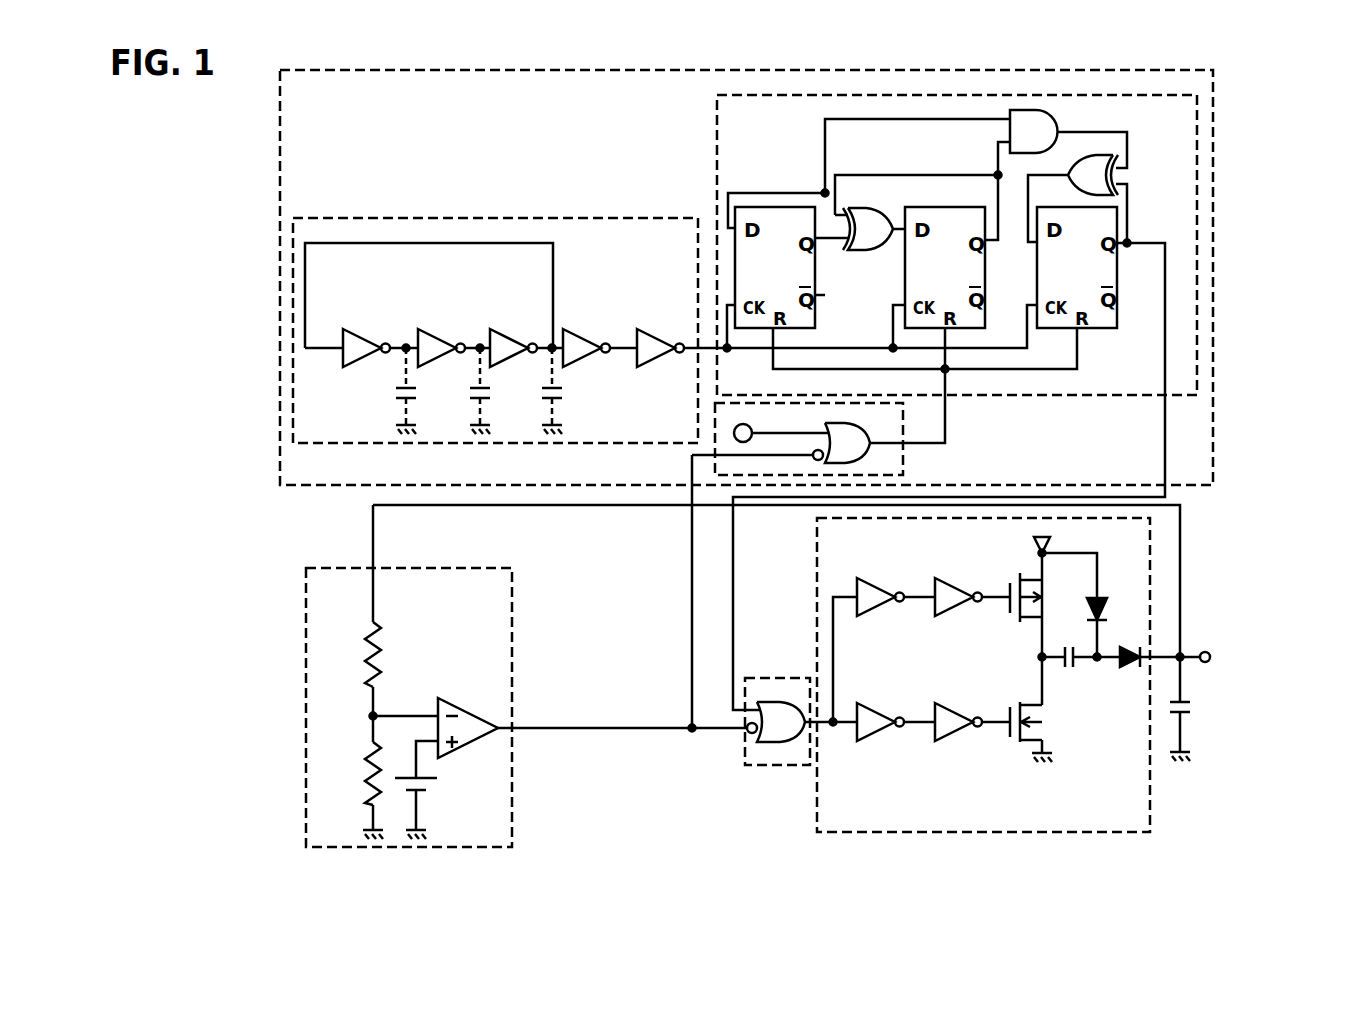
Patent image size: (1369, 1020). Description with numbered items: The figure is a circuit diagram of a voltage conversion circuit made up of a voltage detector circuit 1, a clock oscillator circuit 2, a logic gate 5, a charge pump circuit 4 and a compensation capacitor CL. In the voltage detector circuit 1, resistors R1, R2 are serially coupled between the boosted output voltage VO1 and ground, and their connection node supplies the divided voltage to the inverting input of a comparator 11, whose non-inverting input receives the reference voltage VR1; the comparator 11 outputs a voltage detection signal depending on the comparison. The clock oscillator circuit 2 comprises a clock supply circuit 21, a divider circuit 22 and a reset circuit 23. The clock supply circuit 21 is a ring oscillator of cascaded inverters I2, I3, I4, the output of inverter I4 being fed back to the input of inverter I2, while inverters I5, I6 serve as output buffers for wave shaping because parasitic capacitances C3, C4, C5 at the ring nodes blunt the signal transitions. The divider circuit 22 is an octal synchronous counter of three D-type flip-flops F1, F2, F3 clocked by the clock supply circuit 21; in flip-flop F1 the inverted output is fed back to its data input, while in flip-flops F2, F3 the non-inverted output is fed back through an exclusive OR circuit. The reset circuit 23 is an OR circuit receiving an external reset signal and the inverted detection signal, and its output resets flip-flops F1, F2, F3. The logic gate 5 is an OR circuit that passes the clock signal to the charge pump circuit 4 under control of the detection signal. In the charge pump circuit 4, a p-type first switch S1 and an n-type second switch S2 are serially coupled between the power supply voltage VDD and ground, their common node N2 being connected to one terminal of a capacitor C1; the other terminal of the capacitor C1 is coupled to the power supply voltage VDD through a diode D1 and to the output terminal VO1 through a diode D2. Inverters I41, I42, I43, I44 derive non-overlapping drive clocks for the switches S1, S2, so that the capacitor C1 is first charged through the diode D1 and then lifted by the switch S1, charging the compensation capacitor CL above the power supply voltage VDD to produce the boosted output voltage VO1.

The voltage detector circuit 1 is at (470, 568).
The clock oscillator circuit 2 is at (1213, 205).
The charge pump circuit 4 is at (910, 832).
The logic gate 5 is at (745, 765).
The comparator 11 is at (470, 697).
The clock supply circuit 21 is at (320, 218).
The divider circuit 22 is at (717, 110).
The reset circuit 23 is at (903, 463).
The inverter I2 is at (365, 336).
The inverter I3 is at (460, 336).
The inverter I4 is at (522, 336).
The inverter I5 is at (595, 336).
The inverter I6 is at (663, 336).
The parasitic capacitance C3 is at (395, 396).
The parasitic capacitance C4 is at (468, 396).
The parasitic capacitance C5 is at (563, 396).
The D-type flip-flop F1 is at (815, 300).
The D-type flip-flop F2 is at (985, 272).
The D-type flip-flop F3 is at (1117, 262).
The resistor R1 is at (365, 765).
The resistor R2 is at (368, 660).
The reference voltage VR1 is at (446, 790).
The inverter I41 is at (865, 590).
The inverter I42 is at (948, 590).
The inverter I43 is at (868, 742).
The inverter I44 is at (948, 742).
The first switch S1 is at (1008, 585).
The second switch S2 is at (1005, 735).
The diode D1 is at (1104, 610).
The diode D2 is at (1118, 670).
The capacitor C1 is at (1062, 670).
The node N2 is at (1025, 662).
The compensation capacitor CL is at (1192, 708).
The boosted output voltage VO1 is at (1208, 650).
The power supply voltage VDD is at (1067, 564).